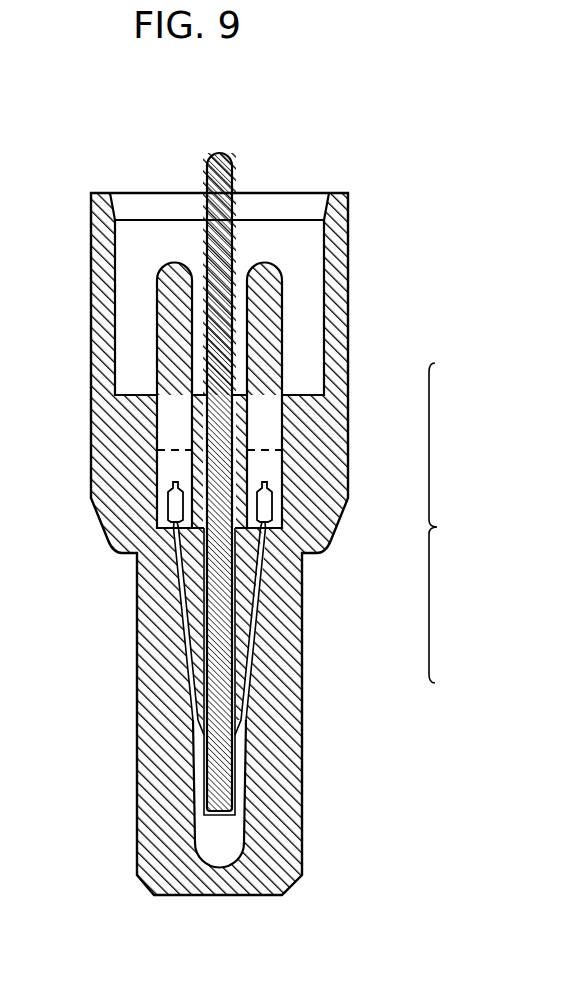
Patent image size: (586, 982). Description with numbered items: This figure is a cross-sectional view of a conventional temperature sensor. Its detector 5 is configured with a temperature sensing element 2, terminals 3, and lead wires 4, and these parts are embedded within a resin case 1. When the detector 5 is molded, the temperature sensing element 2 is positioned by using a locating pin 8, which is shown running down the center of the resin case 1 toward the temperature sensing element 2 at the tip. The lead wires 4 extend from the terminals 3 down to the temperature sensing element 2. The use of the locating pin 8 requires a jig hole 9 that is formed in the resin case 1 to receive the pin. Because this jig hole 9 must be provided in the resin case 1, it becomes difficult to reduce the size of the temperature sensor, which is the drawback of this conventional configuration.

The resin case 1 is at (152, 700).
The temperature sensing element 2 is at (225, 835).
The terminals 3 is at (272, 340).
The lead wires 4 is at (253, 637).
The detector 5 is at (444, 523).
The locating pin 8 is at (221, 155).
The jig hole 9 is at (195, 412).